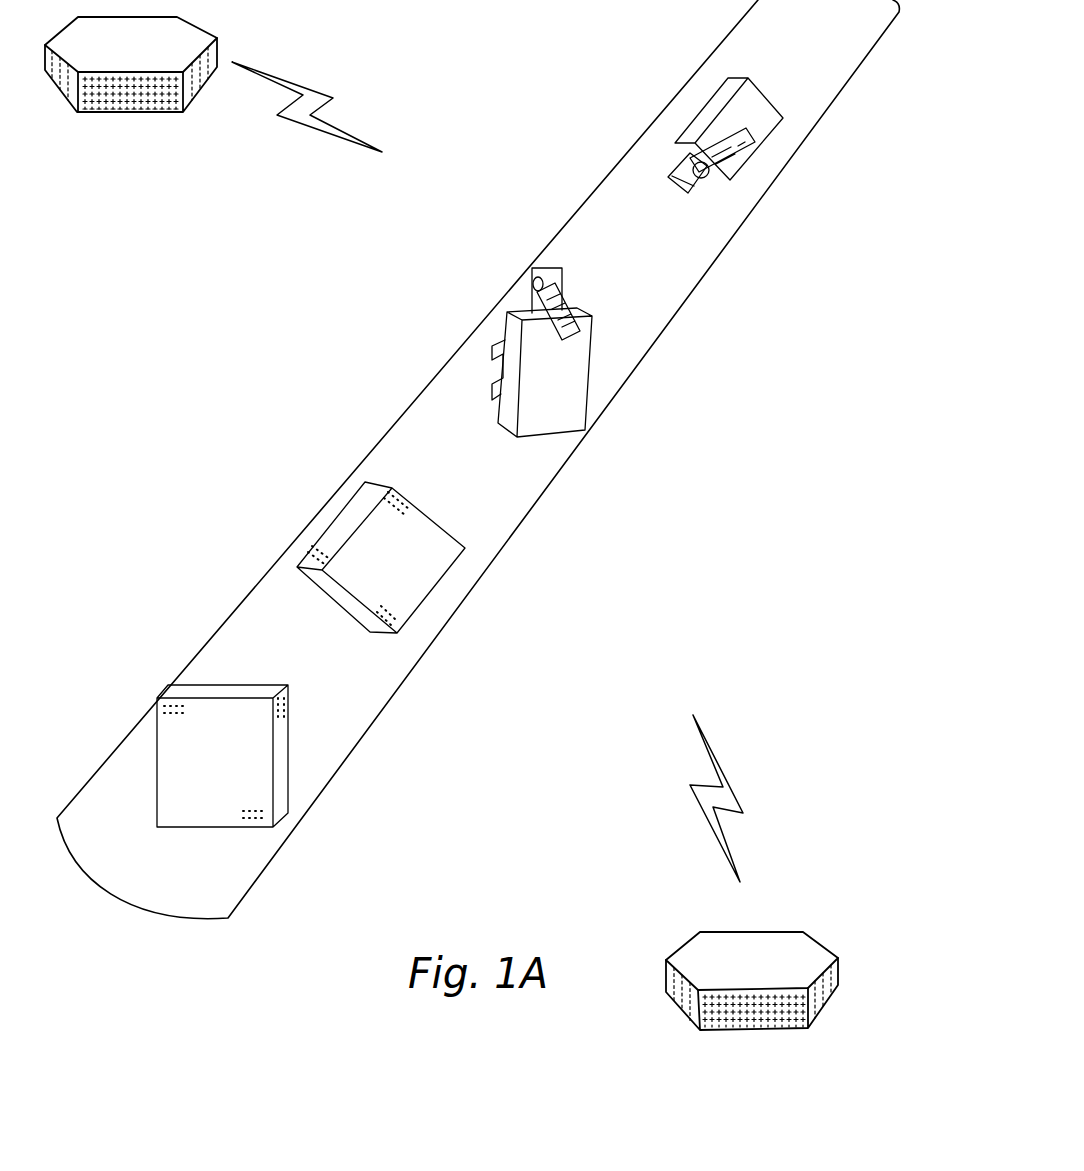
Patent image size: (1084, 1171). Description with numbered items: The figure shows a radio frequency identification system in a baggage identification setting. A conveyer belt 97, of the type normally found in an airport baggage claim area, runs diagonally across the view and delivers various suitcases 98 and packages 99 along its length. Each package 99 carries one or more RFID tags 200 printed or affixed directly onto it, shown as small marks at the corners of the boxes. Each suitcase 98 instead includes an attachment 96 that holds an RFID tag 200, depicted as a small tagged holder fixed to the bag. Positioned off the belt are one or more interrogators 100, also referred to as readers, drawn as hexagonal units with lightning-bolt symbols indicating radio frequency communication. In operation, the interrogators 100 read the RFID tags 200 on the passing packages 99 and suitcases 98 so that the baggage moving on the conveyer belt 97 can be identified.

The attachment 96 is at (733, 167).
The conveyer belt 97 is at (438, 403).
The suitcase 98 is at (757, 107).
The package 99 is at (172, 748).
The interrogator 100 is at (130, 112).
The RFID tag 200 is at (758, 135).